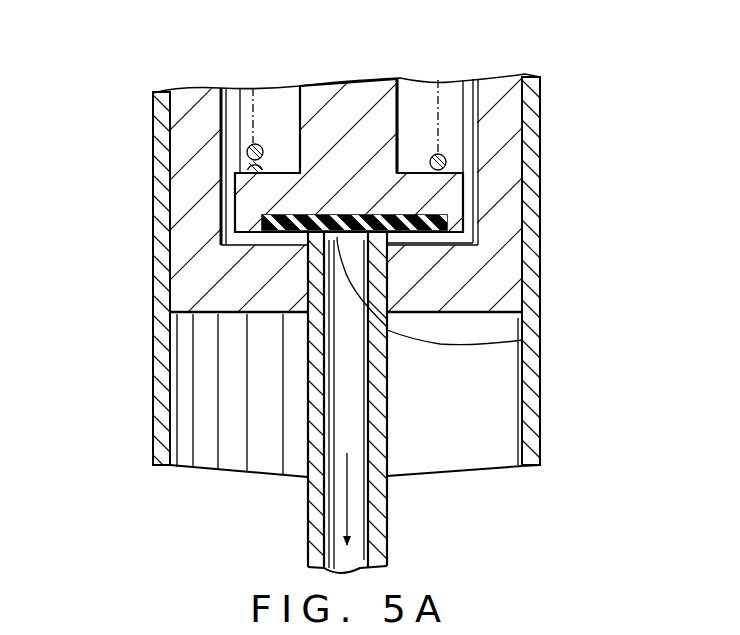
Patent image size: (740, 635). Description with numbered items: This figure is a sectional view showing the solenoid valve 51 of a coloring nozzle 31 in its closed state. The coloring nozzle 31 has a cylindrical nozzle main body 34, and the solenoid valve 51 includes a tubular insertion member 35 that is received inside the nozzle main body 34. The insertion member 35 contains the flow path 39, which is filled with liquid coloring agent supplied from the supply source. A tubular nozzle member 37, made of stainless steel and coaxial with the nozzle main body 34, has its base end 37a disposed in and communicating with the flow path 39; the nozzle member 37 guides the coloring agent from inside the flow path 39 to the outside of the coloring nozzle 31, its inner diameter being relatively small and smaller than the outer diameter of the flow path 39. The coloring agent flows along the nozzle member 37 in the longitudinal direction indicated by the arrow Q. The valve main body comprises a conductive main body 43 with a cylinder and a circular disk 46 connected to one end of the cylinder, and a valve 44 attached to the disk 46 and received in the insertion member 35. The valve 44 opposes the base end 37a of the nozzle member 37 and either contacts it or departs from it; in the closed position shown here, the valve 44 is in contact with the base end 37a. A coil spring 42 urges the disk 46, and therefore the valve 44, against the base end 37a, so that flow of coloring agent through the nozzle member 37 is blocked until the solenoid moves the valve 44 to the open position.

The coloring nozzle 31 is at (126, 320).
The nozzle main body 34 is at (153, 395).
The insertion member 35 is at (522, 96).
The nozzle member 37 is at (387, 530).
The base end 37a is at (385, 238).
The flow path 39 is at (238, 92).
The coil spring 42 is at (247, 154).
The main body 43 is at (470, 222).
The valve 44 is at (522, 340).
The circular disk 46 is at (450, 187).
The solenoid valve 51 is at (530, 140).
The arrow Q is at (350, 503).